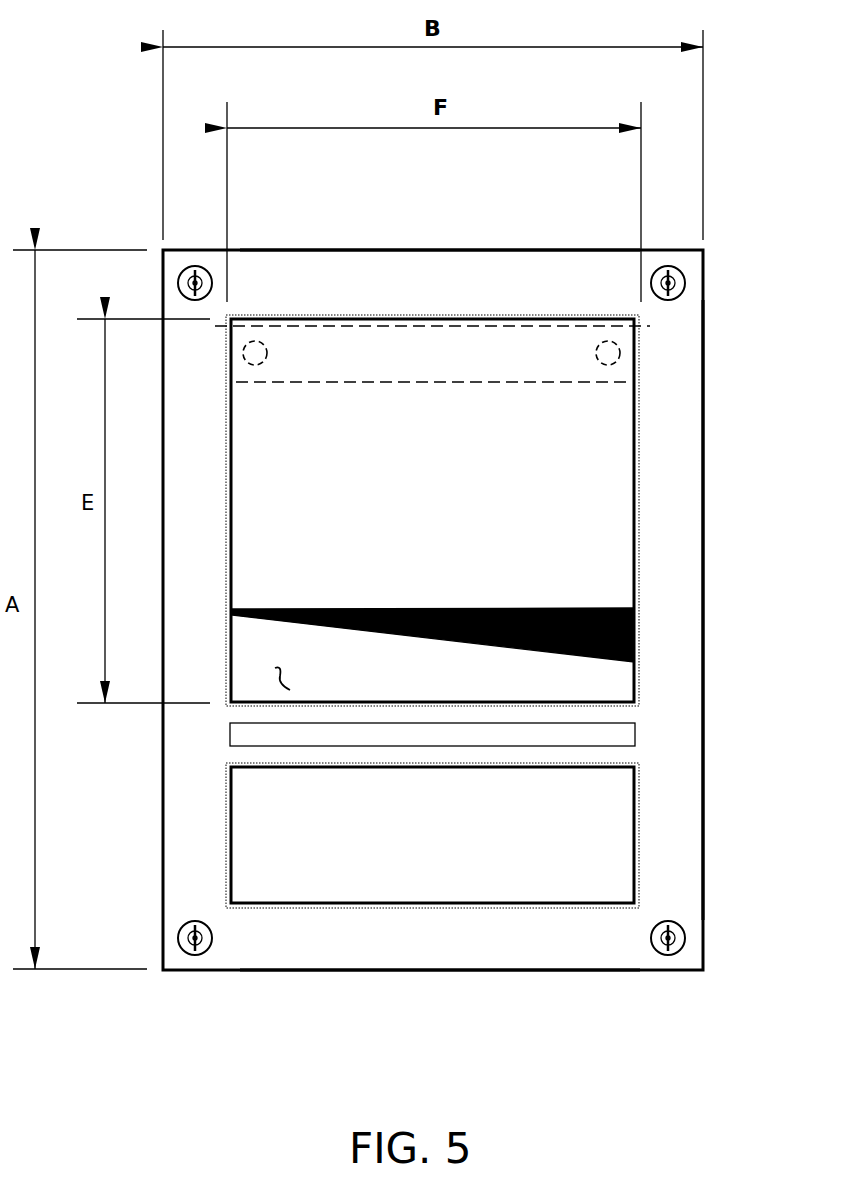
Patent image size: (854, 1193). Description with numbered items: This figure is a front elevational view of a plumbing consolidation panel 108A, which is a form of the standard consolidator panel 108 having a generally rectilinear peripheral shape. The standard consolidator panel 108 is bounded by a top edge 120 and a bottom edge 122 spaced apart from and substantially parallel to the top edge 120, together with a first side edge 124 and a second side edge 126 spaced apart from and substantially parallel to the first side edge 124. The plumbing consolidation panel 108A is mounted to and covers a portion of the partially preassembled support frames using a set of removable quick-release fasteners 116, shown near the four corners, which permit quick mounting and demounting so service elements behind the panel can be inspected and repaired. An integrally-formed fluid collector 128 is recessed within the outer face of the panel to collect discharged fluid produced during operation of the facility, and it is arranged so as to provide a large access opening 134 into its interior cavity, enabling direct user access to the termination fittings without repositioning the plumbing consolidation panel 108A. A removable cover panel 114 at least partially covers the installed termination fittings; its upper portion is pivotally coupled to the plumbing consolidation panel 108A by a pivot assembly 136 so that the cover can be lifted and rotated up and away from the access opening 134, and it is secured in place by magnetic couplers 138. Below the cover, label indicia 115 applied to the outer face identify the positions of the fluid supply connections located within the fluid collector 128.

The standard consolidator panel 108 is at (394, 635).
The plumbing consolidation panel 108A is at (394, 568).
The removable cover panel 114 is at (613, 447).
The label indicia 115 is at (635, 735).
The removable quick-release fasteners 116 is at (195, 283).
The top edge 120 is at (582, 250).
The bottom edge 122 is at (312, 971).
The first side edge 124 is at (163, 820).
The second side edge 126 is at (705, 551).
The fluid collector 128 is at (588, 677).
The access opening 134 is at (283, 677).
The pivot assembly 136 is at (330, 326).
The magnetic couplers 138 is at (620, 353).